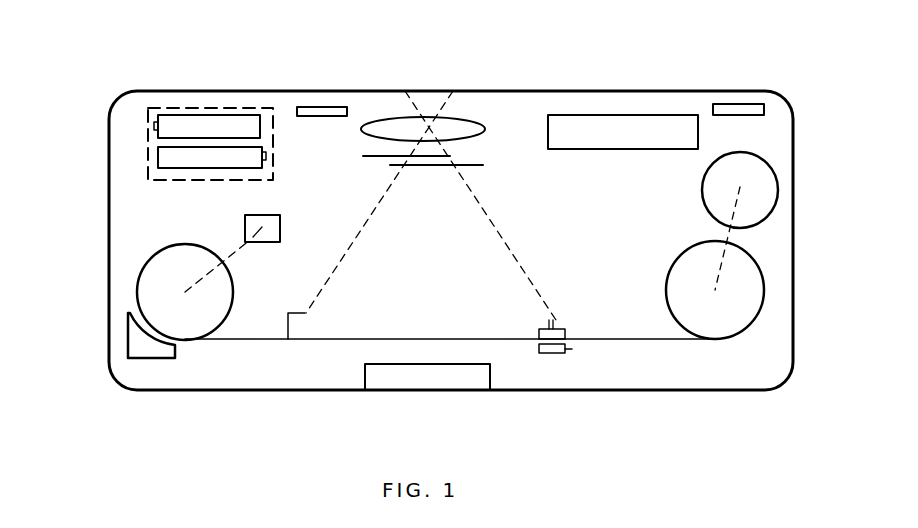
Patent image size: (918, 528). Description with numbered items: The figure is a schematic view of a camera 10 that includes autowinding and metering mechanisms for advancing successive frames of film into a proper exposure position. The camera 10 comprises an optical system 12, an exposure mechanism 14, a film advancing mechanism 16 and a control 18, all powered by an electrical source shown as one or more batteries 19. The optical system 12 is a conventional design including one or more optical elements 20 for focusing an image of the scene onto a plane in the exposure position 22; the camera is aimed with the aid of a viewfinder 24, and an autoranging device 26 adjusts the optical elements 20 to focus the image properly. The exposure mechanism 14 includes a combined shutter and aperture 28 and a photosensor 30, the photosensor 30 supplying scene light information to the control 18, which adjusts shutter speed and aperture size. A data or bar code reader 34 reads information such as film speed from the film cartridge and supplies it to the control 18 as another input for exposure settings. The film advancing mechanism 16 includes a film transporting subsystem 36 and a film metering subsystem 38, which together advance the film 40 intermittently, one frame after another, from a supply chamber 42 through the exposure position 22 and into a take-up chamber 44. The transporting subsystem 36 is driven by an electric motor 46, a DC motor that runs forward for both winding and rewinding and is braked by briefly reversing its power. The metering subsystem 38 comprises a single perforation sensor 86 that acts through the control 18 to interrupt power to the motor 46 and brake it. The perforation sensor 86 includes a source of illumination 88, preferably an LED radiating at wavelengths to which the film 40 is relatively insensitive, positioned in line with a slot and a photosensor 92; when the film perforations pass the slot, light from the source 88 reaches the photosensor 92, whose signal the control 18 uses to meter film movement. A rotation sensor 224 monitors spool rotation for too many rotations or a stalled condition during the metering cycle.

The camera 10 is at (577, 70).
The optical system 12 is at (383, 98).
The exposure mechanism 14 is at (512, 108).
The film advancing mechanism 16 is at (636, 214).
The control 18 is at (648, 102).
The batteries 19 is at (128, 159).
The optical elements 20 is at (488, 98).
The exposure position 22 is at (455, 338).
The viewfinder 24 is at (443, 384).
The autoranging device 26 is at (322, 100).
The combined shutter and aperture 28 is at (478, 165).
The photosensor 30 is at (745, 100).
The data or bar code reader 34 is at (155, 350).
The film transporting subsystem 36 is at (736, 348).
The film metering subsystem 38 is at (563, 297).
The film 40 is at (330, 345).
The supply chamber 42 is at (148, 278).
The take-up chamber 44 is at (752, 283).
The electric motor 46 is at (762, 172).
The perforation sensor 86 is at (596, 353).
The source of illumination 88 is at (568, 330).
The photosensor 92 is at (555, 353).
The rotation sensor 224 is at (278, 226).